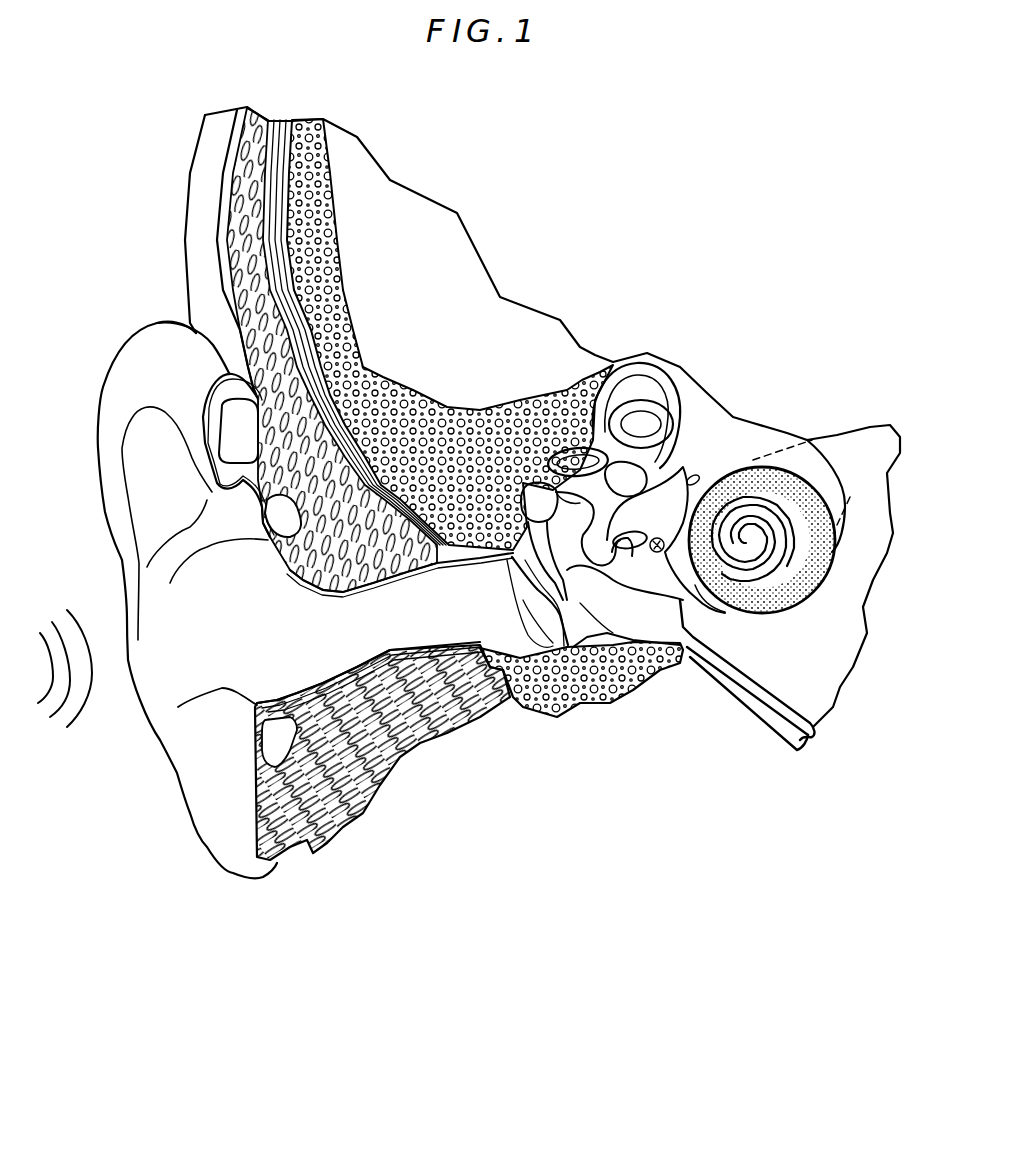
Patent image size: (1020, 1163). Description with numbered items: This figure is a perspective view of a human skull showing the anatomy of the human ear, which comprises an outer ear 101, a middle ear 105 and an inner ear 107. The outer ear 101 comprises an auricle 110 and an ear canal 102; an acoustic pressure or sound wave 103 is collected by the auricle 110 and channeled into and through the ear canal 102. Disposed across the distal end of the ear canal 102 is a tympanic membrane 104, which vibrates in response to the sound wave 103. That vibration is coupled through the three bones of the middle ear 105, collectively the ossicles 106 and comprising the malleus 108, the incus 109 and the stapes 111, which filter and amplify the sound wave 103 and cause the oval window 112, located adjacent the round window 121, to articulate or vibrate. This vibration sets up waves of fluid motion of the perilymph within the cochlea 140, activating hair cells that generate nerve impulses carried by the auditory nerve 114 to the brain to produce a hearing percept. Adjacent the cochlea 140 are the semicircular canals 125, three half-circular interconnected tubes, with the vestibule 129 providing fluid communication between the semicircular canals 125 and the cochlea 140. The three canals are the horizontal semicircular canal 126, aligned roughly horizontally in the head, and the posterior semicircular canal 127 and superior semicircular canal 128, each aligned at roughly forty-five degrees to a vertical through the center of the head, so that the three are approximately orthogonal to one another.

The outer ear 101 is at (232, 905).
The ear canal 102 is at (390, 630).
The sound wave 103 is at (76, 632).
The tympanic membrane 104 is at (545, 600).
The middle ear 105 is at (660, 755).
The ossicles 106 is at (590, 637).
The inner ear 107 is at (812, 758).
The malleus 108 is at (524, 482).
The incus 109 is at (587, 502).
The auricle 110 is at (187, 814).
The stapes 111 is at (620, 527).
The oval window 112 is at (690, 492).
The auditory nerve 114 is at (887, 430).
The round window 121 is at (707, 597).
The semicircular canals 125 is at (634, 335).
The horizontal semicircular canal 126 is at (537, 483).
The posterior semicircular canal 127 is at (612, 462).
The superior semicircular canal 128 is at (625, 462).
The vestibule 129 is at (700, 473).
The cochlea 140 is at (837, 550).